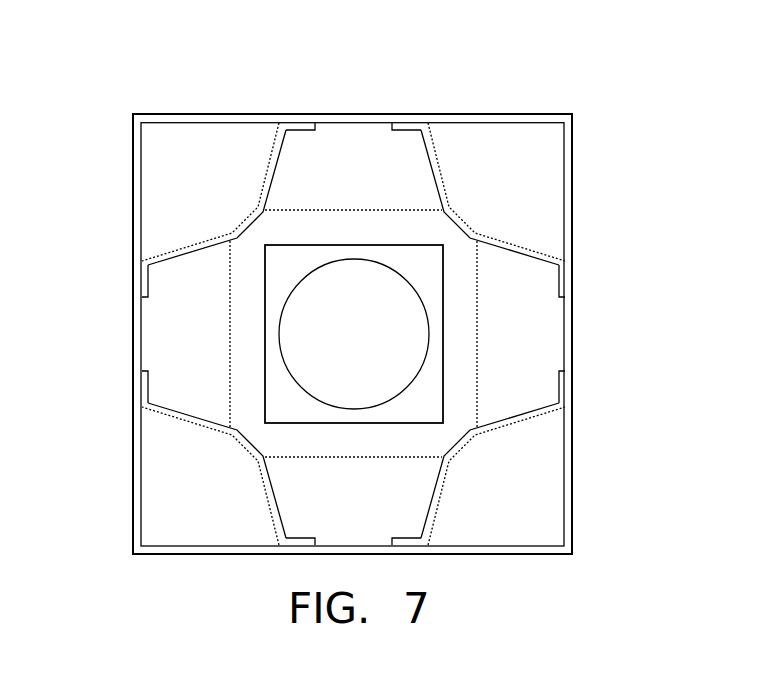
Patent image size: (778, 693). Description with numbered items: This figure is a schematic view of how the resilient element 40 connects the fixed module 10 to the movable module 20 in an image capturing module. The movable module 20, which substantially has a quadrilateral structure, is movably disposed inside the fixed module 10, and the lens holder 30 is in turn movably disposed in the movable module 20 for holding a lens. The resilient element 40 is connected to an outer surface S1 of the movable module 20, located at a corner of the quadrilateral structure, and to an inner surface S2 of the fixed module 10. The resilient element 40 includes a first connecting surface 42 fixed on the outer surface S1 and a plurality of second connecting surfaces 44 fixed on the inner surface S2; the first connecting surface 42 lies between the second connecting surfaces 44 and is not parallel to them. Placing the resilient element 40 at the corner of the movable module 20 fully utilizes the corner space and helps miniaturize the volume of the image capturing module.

The fixed module 10 is at (568, 152).
The movable module 20 is at (352, 228).
The lens holder 30 is at (422, 272).
The resilient element 40 is at (275, 165).
The first connecting surface 42 is at (256, 215).
The second connecting surfaces 44 is at (295, 121).
The outer surface S1 is at (237, 237).
The inner surface S2 is at (142, 497).